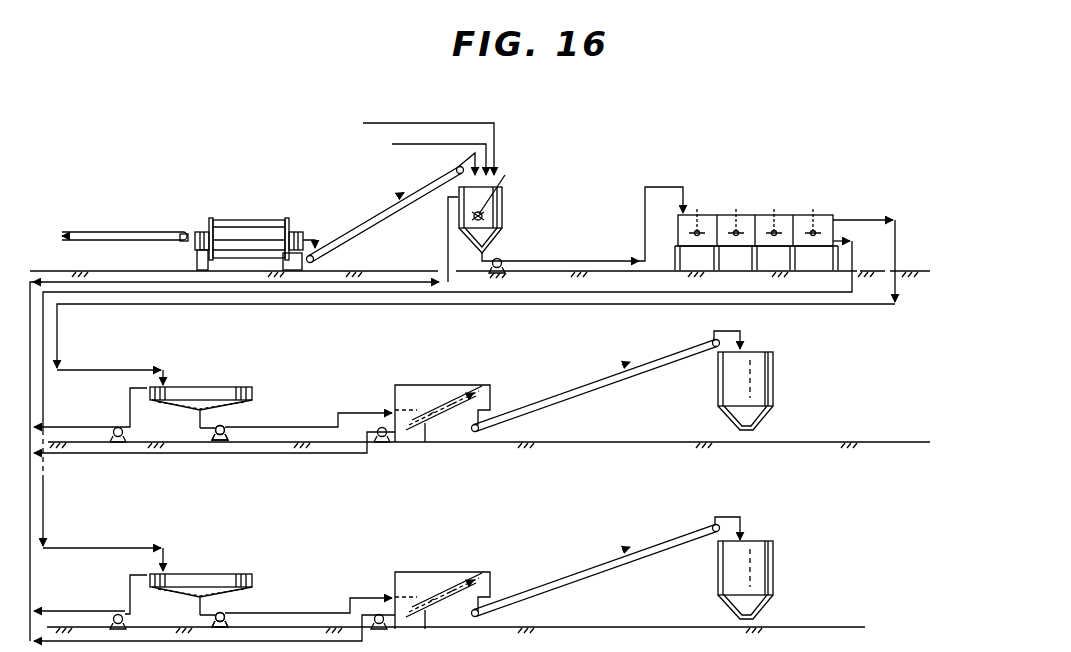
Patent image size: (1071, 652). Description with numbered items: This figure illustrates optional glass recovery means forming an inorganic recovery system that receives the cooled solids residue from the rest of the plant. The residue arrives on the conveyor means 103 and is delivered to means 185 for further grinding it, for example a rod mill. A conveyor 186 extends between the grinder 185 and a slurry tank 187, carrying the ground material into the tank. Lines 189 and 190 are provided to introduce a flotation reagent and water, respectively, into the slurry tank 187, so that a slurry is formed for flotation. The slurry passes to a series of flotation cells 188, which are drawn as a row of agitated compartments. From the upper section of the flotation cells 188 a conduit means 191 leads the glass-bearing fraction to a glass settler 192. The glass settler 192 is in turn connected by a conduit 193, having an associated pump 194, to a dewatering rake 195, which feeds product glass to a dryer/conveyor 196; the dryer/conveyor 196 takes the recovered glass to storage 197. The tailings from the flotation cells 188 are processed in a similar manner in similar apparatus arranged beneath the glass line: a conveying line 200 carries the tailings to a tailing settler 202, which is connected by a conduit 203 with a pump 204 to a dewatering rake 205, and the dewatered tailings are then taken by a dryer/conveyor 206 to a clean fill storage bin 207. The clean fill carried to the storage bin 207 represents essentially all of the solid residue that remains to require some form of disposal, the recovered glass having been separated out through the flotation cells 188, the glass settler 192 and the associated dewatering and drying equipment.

The conveyor means 103 is at (125, 208).
The grinder 185 is at (232, 232).
The conveyor 186 is at (333, 240).
The slurry tank 187 is at (503, 215).
The flotation cells 188 is at (765, 193).
The line 189 is at (425, 155).
The line 190 is at (430, 98).
The conduit means 191 is at (898, 242).
The glass settler 192 is at (256, 358).
The conduit 193 is at (317, 423).
The pump 194 is at (222, 428).
The dewatering rake 195 is at (455, 360).
The dryer/conveyor 196 is at (512, 412).
The storage 197 is at (770, 379).
The conveying line 200 is at (508, 294).
The tailing settler 202 is at (247, 558).
The conduit 203 is at (325, 595).
The pump 204 is at (222, 615).
The dewatering rake 205 is at (442, 585).
The dryer/conveyor 206 is at (518, 592).
The clean fill storage bin 207 is at (770, 568).